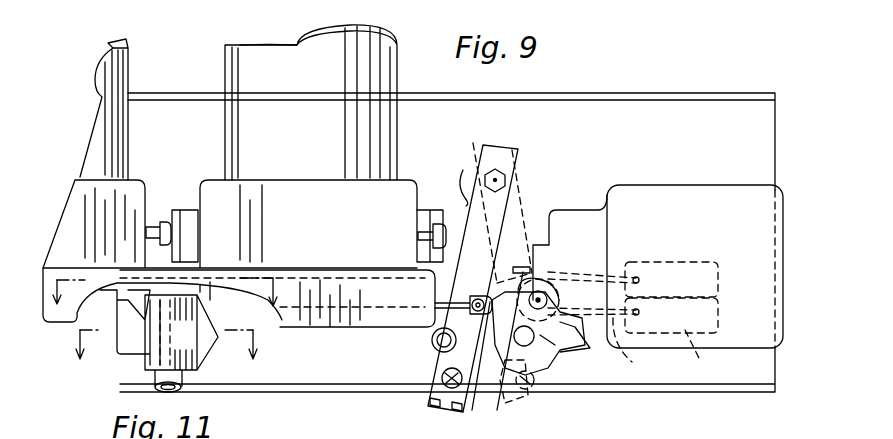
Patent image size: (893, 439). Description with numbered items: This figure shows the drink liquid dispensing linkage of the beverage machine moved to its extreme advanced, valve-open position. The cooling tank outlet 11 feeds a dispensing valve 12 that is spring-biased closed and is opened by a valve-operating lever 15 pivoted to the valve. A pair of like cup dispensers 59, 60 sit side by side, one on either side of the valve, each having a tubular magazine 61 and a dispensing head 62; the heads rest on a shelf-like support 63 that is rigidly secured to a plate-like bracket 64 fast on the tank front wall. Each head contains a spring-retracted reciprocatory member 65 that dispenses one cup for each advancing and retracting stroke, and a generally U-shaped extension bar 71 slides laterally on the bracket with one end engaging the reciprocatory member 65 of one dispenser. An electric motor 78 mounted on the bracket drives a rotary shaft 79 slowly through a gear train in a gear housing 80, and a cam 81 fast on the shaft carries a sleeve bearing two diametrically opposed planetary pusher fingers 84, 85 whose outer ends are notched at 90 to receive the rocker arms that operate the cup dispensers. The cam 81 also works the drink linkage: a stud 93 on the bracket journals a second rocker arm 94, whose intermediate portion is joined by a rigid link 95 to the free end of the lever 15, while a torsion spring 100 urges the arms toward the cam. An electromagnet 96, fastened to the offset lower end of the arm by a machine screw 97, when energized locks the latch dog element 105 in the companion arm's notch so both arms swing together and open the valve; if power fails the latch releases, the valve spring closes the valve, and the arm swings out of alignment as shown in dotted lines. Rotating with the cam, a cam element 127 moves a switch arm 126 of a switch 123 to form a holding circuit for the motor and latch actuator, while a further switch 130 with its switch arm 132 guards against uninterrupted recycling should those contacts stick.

The outlet 11 is at (179, 293).
The dispensing valve 12 is at (134, 364).
The valve-operating lever 15 is at (146, 344).
The cup dispenser 59 is at (88, 76).
The cup dispenser 60 is at (240, 36).
The tubular magazine 61 is at (308, 80).
The dispensing head 62 is at (132, 192).
The shelf-like support 63 is at (340, 316).
The plate-like bracket 64 is at (616, 134).
The reciprocatory member 65 is at (146, 233).
The extension bar 71 is at (198, 222).
The electric motor 78 is at (702, 221).
The rotary shaft 79 is at (545, 306).
The gear housing 80 is at (594, 246).
The cam 81 is at (509, 353).
The planetary pusher finger 84 is at (536, 332).
The planetary pusher finger 85 is at (475, 368).
The notch 90 is at (558, 348).
The stud 93 is at (498, 180).
The second rocker arm 94 is at (492, 212).
The rigid link 95 is at (232, 312).
The electromagnet 96 is at (432, 372).
The machine screw 97 is at (447, 385).
The torsion spring 100 is at (459, 179).
The latch dog element 105 is at (440, 410).
The switch 123 is at (708, 354).
The switch arm 126 is at (643, 348).
The cam element 127 is at (561, 299).
The switch 130 is at (688, 262).
The switch arm 132 is at (511, 268).